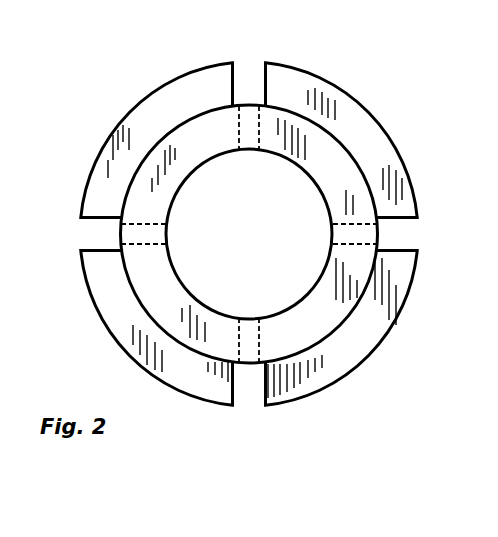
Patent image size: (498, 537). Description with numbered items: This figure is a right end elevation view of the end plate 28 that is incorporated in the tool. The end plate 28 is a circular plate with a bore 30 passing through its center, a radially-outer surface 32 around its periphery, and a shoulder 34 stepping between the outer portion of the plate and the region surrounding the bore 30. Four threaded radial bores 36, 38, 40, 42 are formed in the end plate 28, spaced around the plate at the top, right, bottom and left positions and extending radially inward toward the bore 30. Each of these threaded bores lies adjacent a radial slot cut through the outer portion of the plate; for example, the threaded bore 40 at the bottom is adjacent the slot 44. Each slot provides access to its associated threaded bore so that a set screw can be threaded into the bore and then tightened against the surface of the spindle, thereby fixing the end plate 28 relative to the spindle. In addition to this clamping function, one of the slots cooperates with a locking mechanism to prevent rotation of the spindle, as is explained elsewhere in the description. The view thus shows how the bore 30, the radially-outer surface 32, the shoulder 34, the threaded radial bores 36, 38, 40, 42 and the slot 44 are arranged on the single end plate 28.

The end plate 28 is at (153, 78).
The bore 30 is at (313, 182).
The radially-outer surface 32 is at (340, 87).
The shoulder 34 is at (165, 130).
The threaded radial bore 36 is at (252, 118).
The threaded radial bore 38 is at (352, 245).
The threaded radial bore 40 is at (246, 340).
The threaded radial bore 42 is at (133, 243).
The radial slot 44 is at (233, 393).